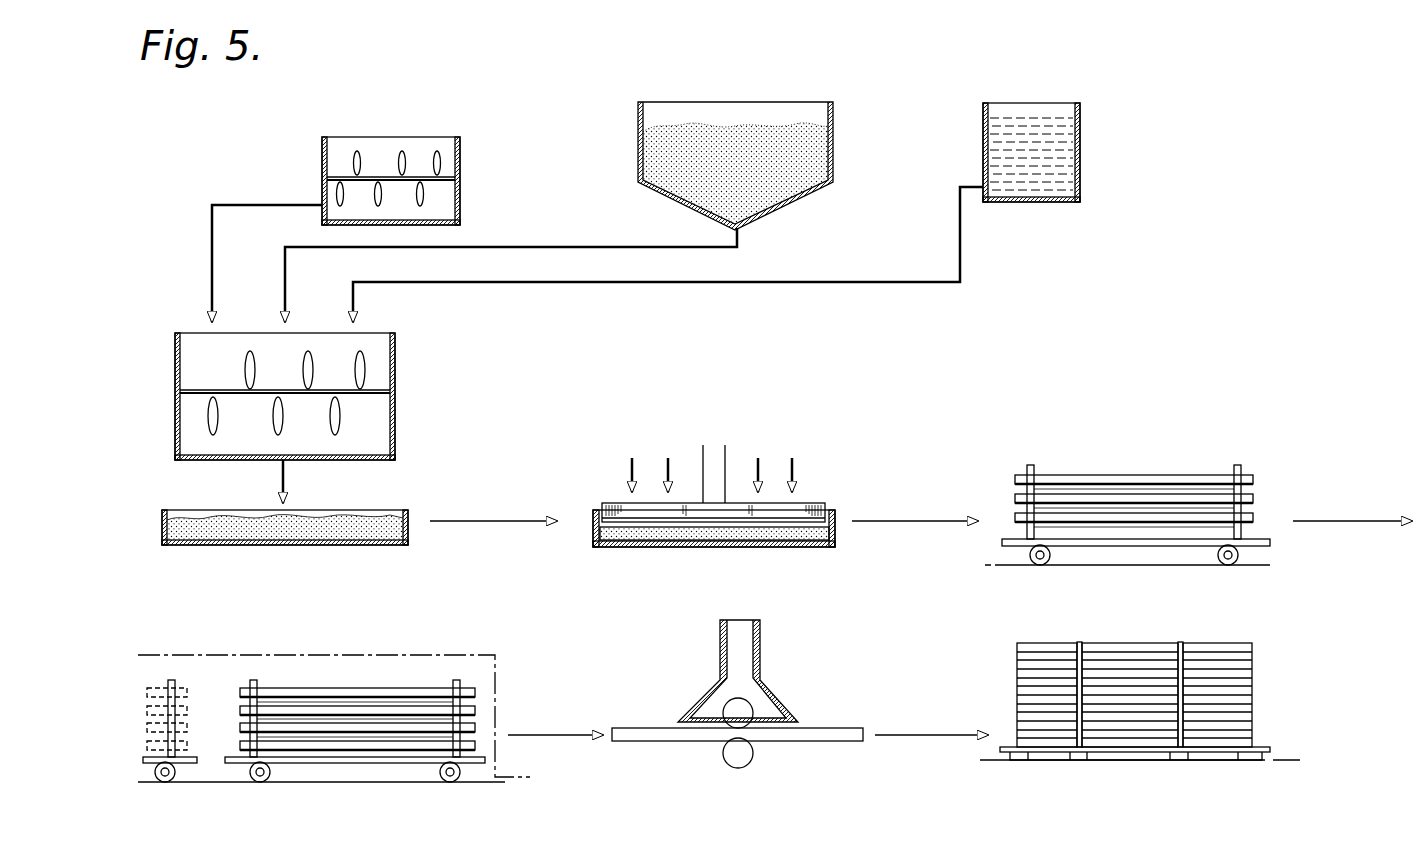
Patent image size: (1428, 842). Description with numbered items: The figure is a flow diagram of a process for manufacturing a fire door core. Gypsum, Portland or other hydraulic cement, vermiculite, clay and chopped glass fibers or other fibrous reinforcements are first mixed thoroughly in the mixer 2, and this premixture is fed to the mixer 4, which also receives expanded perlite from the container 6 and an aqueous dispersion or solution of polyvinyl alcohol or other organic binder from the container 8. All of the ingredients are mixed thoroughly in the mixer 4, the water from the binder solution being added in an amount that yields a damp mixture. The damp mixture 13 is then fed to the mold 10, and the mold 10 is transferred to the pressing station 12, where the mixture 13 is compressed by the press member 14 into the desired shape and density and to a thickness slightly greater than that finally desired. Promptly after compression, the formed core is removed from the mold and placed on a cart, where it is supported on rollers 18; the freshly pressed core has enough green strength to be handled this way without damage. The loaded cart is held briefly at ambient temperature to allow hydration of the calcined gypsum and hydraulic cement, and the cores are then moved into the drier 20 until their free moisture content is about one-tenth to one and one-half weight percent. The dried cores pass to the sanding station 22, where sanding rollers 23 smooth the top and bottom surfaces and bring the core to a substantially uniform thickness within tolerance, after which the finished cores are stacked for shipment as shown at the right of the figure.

The mixer 2 is at (386, 145).
The mixer 4 is at (395, 372).
The container 6 is at (735, 112).
The container 8 is at (1030, 113).
The mold 10 is at (367, 546).
The pressing station 12 is at (624, 502).
The damp mixture 13 is at (332, 528).
The press member 14 is at (811, 511).
The rollers 18 is at (1128, 485).
The drier 20 is at (323, 652).
The sanding station 22 is at (766, 652).
The sanding rollers 23 is at (745, 704).